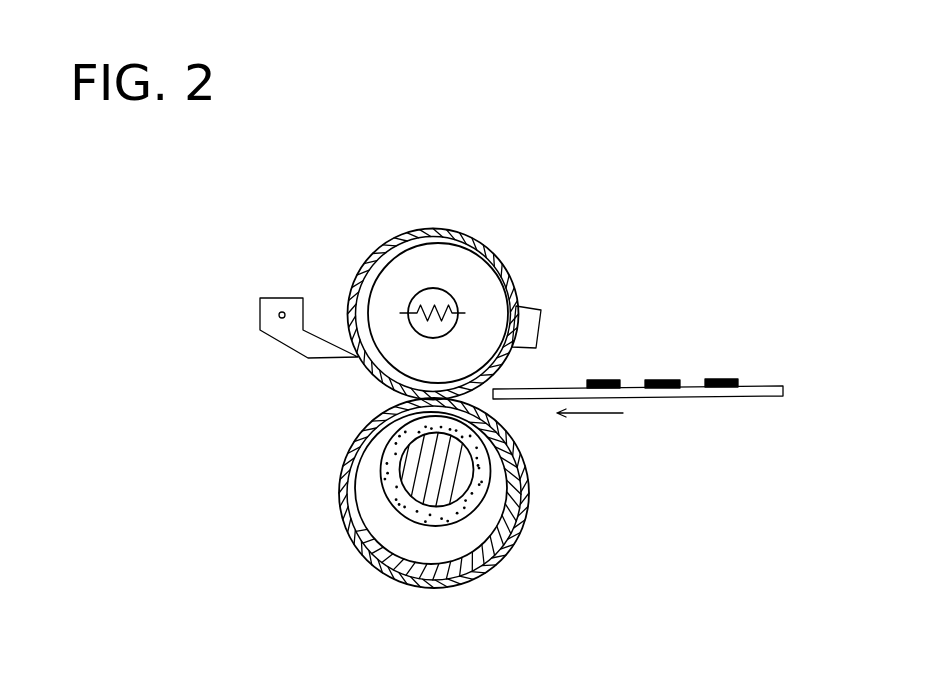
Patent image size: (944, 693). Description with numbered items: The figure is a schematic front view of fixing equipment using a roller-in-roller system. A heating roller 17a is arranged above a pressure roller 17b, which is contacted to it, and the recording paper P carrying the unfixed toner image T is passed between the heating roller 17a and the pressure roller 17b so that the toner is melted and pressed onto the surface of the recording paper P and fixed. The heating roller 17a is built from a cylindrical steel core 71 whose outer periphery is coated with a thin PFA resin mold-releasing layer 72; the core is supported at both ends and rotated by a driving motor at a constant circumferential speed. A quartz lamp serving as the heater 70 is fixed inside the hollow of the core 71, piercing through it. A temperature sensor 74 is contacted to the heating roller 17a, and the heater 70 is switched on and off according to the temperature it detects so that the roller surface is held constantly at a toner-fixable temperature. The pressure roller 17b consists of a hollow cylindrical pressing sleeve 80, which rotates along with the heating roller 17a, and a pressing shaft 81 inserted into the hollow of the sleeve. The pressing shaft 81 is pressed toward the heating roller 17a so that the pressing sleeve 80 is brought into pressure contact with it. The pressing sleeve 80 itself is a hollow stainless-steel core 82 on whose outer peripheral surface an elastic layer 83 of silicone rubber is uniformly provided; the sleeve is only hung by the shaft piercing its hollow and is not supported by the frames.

The heating roller 17a is at (457, 280).
The pressure roller 17b is at (402, 493).
The heater 70 is at (415, 292).
The cylindrical steel core 71 is at (499, 272).
The mold-releasing layer 72 is at (420, 229).
The temperature sensor 74 is at (541, 326).
The pressing sleeve 80 is at (330, 504).
The pressing shaft 81 is at (389, 507).
The core 82 is at (521, 498).
The elastic layer 83 is at (522, 537).
The unfixed toner image T is at (664, 379).
The recording paper P is at (758, 386).